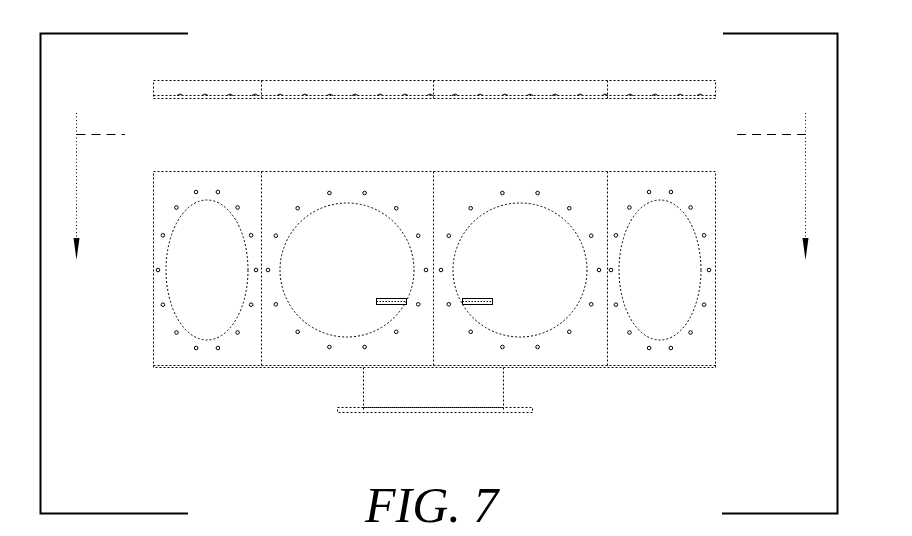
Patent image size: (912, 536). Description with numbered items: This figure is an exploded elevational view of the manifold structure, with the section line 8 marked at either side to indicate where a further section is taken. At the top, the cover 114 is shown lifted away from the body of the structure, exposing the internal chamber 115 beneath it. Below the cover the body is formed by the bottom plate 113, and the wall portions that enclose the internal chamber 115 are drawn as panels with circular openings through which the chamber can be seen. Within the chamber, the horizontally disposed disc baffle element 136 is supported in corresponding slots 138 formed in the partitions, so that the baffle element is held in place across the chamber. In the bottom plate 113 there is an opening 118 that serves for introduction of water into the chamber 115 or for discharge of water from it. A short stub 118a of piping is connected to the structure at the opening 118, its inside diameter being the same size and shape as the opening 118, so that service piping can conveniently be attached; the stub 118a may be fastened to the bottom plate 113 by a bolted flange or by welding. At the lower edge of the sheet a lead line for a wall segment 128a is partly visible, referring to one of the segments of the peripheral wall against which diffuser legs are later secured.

The section line 8- 8 is at (86, 98).
The cover 114 is at (342, 90).
The bottom plate 113 is at (652, 369).
The internal chamber 115 is at (558, 235).
The slots 138 is at (405, 298).
The disc baffle element 136 is at (477, 298).
The opening 118 is at (363, 371).
The stub 118a is at (488, 388).
The lower member 128a is at (320, 534).